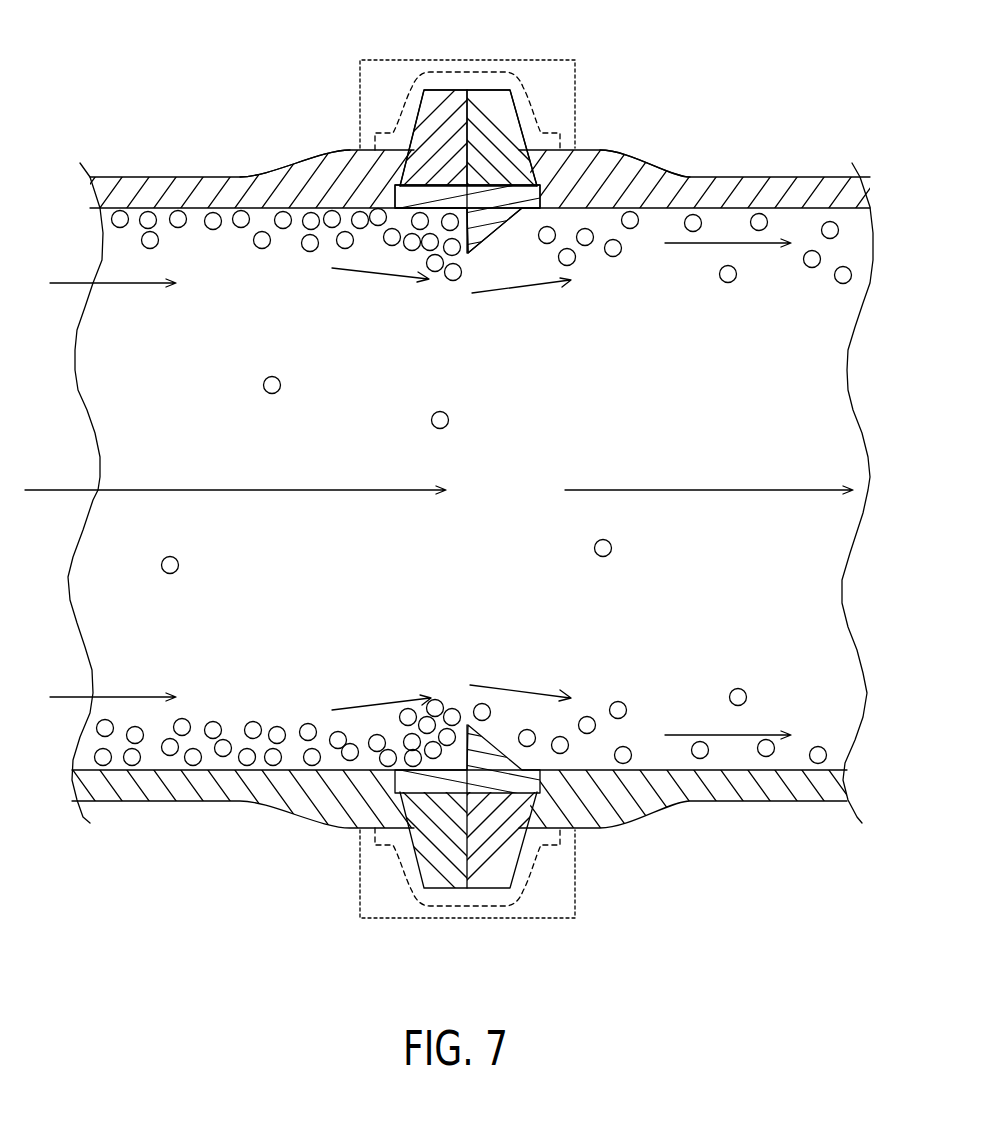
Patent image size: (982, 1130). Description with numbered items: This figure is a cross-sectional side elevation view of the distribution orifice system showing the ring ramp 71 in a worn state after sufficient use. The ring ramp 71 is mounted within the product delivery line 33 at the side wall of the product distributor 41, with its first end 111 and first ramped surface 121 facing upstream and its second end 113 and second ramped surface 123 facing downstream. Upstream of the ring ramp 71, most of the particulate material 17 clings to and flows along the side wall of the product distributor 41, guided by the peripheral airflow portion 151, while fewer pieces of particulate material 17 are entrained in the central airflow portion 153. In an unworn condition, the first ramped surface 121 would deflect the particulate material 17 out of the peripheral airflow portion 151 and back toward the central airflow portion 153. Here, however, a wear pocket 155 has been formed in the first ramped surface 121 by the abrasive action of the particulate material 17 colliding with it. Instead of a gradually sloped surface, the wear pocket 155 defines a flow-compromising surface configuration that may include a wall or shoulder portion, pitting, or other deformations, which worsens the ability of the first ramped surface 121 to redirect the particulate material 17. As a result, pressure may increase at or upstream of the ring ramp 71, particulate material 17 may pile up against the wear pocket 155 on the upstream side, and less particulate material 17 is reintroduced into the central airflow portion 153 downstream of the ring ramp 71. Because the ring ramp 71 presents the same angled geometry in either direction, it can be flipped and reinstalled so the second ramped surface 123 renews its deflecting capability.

The product delivery line 33 is at (96, 92).
The product distributor 41 is at (153, 172).
The first end 111 is at (375, 186).
The second end 113 is at (543, 186).
The first ramped surface 121 is at (440, 170).
The wear pocket 155 is at (463, 205).
The ring ramp 71 is at (513, 178).
The second ramped surface 123 is at (493, 230).
The particulate material 17 is at (418, 262).
The peripheral airflow portion 151 is at (113, 287).
The central airflow portion 153 is at (230, 490).